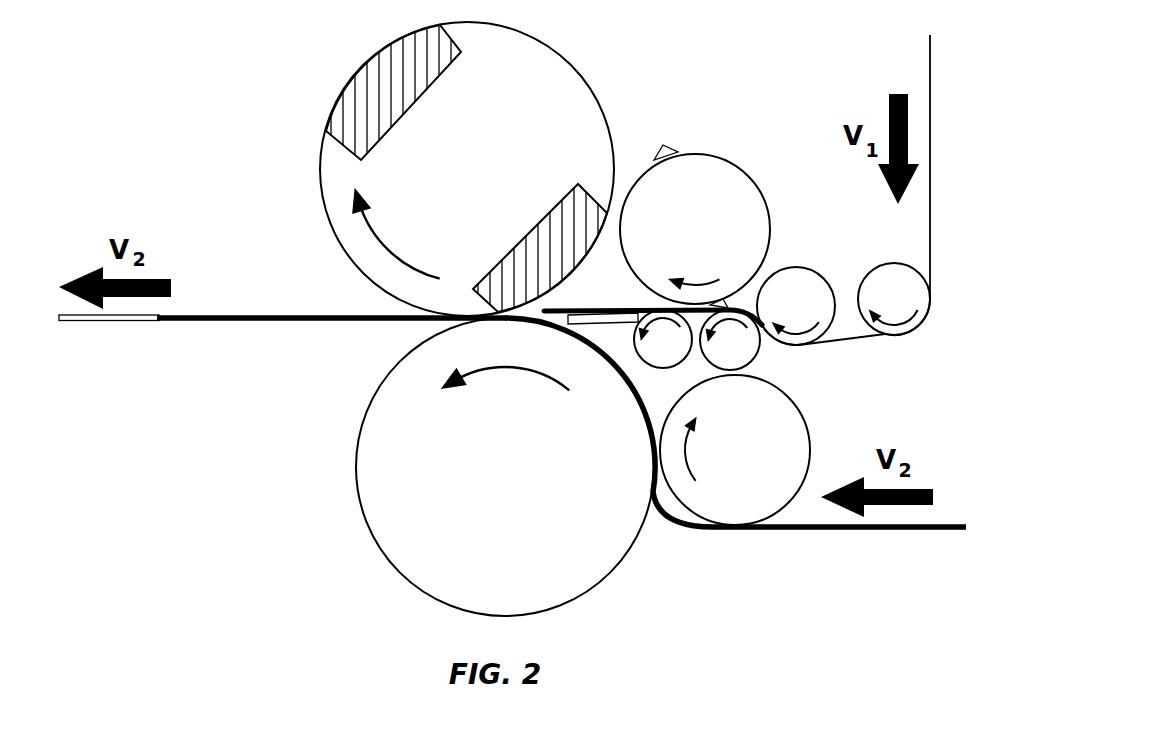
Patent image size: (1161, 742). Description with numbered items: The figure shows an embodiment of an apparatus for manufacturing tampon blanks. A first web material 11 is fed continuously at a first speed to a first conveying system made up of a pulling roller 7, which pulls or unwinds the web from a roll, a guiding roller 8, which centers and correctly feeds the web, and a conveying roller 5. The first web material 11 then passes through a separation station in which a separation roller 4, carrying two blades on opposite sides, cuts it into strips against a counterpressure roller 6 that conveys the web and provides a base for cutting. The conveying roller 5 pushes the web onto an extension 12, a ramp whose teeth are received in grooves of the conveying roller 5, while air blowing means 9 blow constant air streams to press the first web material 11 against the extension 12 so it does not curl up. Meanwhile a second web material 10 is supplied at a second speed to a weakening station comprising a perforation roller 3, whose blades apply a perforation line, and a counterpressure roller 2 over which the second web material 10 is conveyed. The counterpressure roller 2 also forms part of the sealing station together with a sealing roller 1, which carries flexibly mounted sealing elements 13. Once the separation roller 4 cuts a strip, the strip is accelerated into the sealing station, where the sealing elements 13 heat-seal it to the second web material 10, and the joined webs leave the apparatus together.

The sealing roller 1 is at (467, 166).
The counterpressure roller 2 is at (505, 467).
The perforation roller 3 is at (735, 450).
The separation roller 4 is at (695, 226).
The conveying roller 5 is at (663, 339).
The counterpressure roller 6 is at (730, 340).
The pulling roller 7 is at (796, 306).
The guiding roller 8 is at (894, 299).
The air blowing means 9 is at (569, 299).
The second web material 10 is at (735, 447).
The first web material 11 is at (869, 190).
The extension 12 is at (619, 332).
The sealing element 13 is at (558, 226).